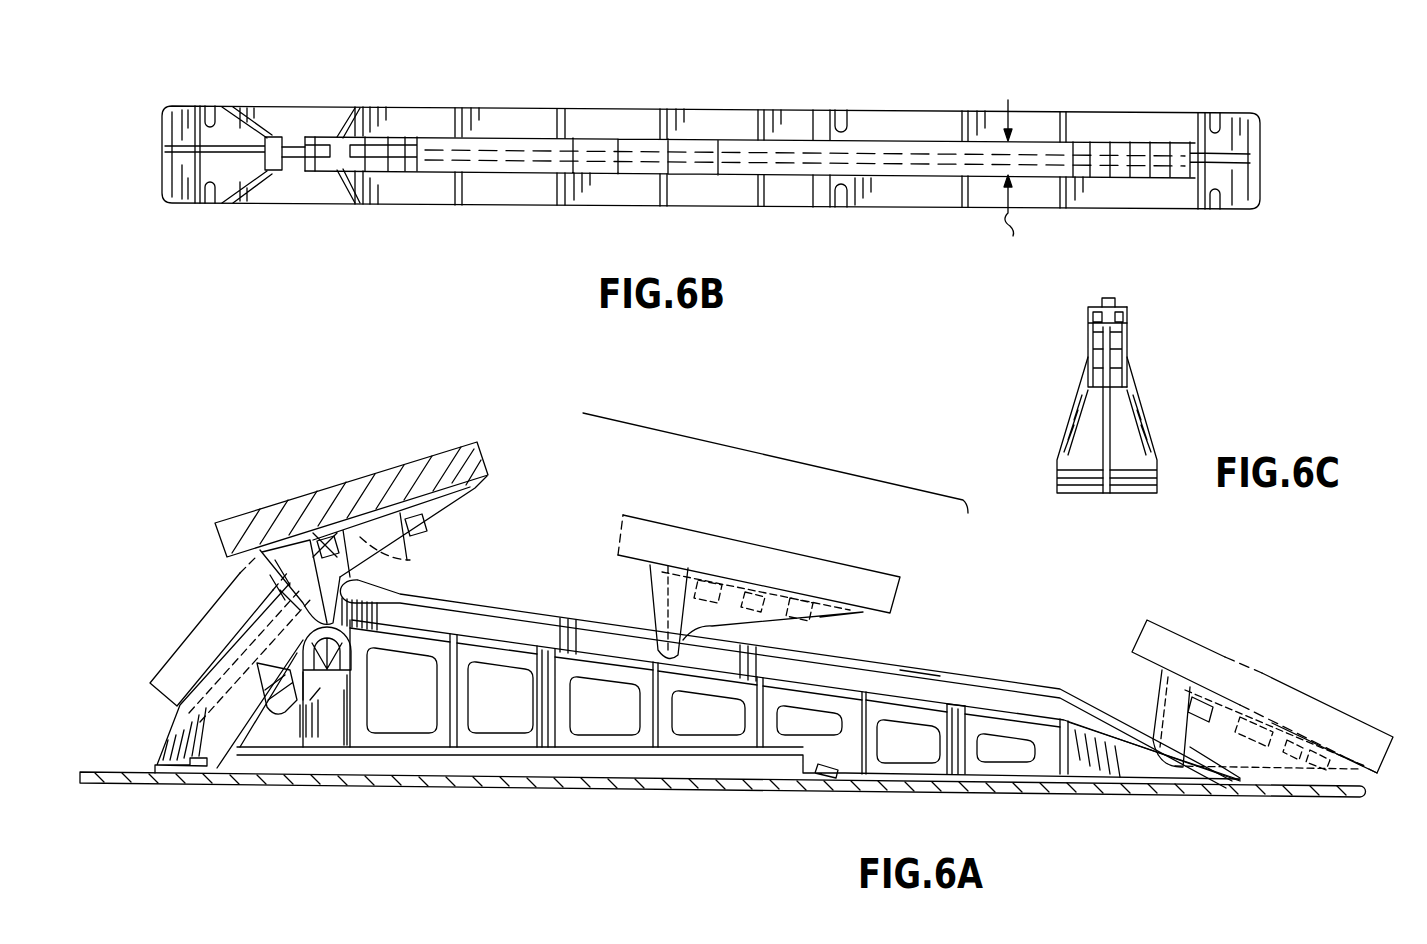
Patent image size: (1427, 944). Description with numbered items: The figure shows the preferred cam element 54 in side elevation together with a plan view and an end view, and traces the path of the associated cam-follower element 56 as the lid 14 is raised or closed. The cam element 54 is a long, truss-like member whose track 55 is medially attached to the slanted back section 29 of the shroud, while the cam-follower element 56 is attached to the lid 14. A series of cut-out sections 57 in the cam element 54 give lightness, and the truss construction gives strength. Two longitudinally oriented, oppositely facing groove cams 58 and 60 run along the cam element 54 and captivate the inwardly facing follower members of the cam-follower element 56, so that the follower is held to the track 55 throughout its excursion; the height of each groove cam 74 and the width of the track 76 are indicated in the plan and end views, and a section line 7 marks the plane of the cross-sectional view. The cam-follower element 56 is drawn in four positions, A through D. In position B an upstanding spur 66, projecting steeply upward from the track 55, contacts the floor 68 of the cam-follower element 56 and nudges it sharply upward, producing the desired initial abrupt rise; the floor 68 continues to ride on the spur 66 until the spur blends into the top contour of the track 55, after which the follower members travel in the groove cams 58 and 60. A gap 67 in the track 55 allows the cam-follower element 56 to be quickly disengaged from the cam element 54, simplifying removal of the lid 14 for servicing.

In FIG. 6A, the section line 7- 7 is at (718, 838).
In FIG. 6A, the lid 14 is at (175, 648).
In FIG. 6A, the slanted back section 29 is at (1298, 790).
In FIG. 6B, the cam element 54 is at (893, 210).
In FIG. 6C, the cam element 54 is at (1140, 405).
In FIG. 6A, the cam element 54 is at (940, 768).
In FIG. 6B, the track 55 is at (513, 150).
In FIG. 6A, the track 55 is at (541, 602).
In FIG. 6A, the cam-follower element 56 is at (362, 462).
In FIG. 6A, the cut-out sections 57 is at (400, 708).
In FIG. 6B, the groove cam 58 is at (492, 163).
In FIG. 6C, the groove cam 58 is at (1131, 350).
In FIG. 6A, the groove cam 58 is at (980, 689).
In FIG. 6B, the groove cam 60 is at (492, 138).
In FIG. 6C, the groove cam 60 is at (1086, 351).
In FIG. 6B, the spur 66 is at (293, 146).
In FIG. 6C, the spur 66 is at (1108, 298).
In FIG. 6A, the spur 66 is at (265, 505).
In FIG. 6B, the gap 67 is at (300, 180).
In FIG. 6A, the gap 67 is at (317, 695).
In FIG. 6A, the floor 68 is at (403, 562).
In FIG. 6A, the height of each groove cam 74 is at (919, 669).
In FIG. 6B, the width of track 76 is at (1015, 197).